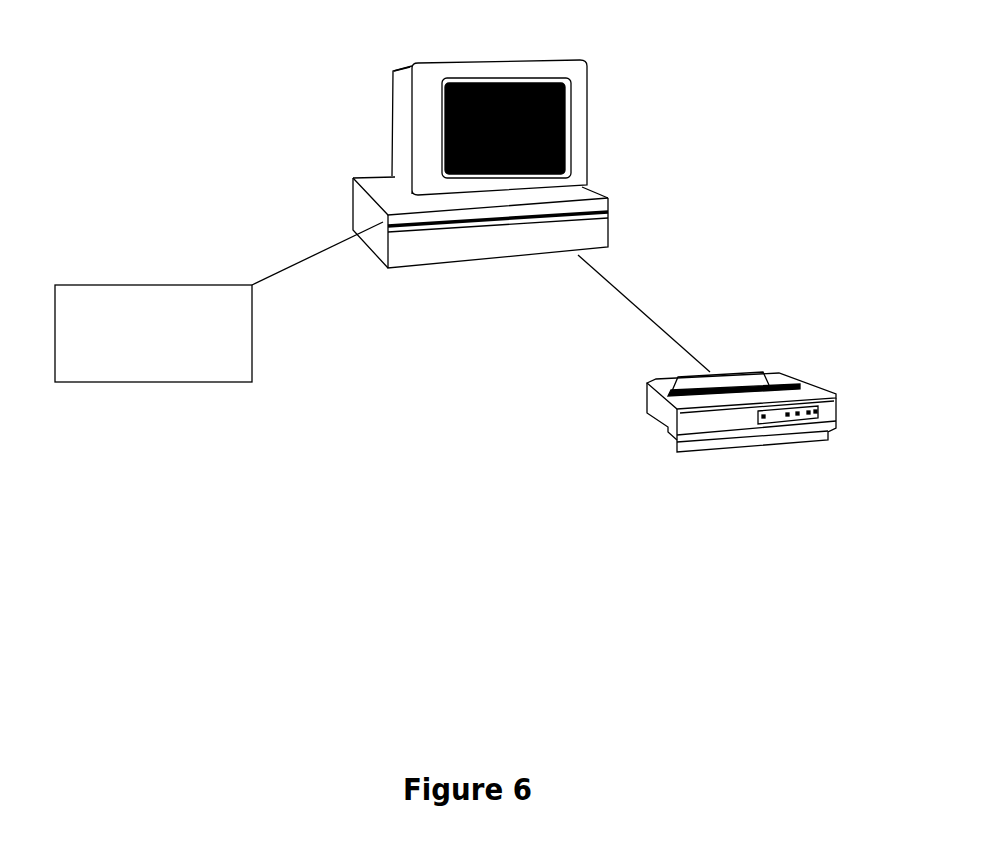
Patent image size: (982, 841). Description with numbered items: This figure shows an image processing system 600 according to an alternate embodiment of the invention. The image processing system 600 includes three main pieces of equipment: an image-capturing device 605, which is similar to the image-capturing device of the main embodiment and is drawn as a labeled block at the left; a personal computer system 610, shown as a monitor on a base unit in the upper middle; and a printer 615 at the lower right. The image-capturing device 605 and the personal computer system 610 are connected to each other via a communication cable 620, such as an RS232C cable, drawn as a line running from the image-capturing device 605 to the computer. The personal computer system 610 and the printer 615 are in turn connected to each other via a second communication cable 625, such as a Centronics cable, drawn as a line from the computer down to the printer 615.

The image processing system 600 is at (492, 580).
The image-capturing device 605 is at (137, 383).
The personal computer system 610 is at (513, 62).
The printer 615 is at (807, 373).
The communication cable 620 is at (290, 267).
The communication cable 625 is at (620, 298).